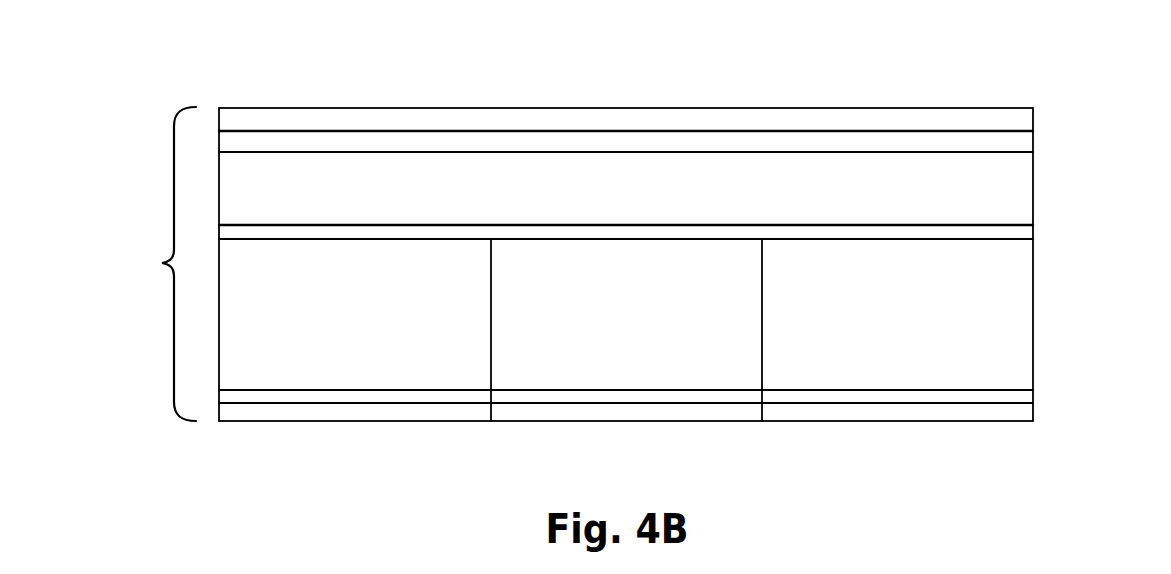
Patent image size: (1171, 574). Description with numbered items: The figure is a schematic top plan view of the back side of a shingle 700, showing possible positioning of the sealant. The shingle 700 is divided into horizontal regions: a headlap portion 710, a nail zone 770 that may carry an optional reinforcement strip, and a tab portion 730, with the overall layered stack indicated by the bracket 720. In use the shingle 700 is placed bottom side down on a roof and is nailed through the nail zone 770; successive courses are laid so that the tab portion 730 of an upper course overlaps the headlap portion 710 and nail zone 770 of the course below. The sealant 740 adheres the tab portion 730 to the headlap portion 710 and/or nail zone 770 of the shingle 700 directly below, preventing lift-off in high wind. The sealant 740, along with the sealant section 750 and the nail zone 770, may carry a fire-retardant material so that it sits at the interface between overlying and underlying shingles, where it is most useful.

The shingle 700 is at (878, 80).
The headlap portion 710 is at (1034, 195).
The layer stack 720 is at (152, 264).
The tab portion 730 is at (1034, 337).
The sealant 740 is at (948, 395).
The sealant section 750 is at (1024, 141).
The nail zone 770 is at (1026, 232).